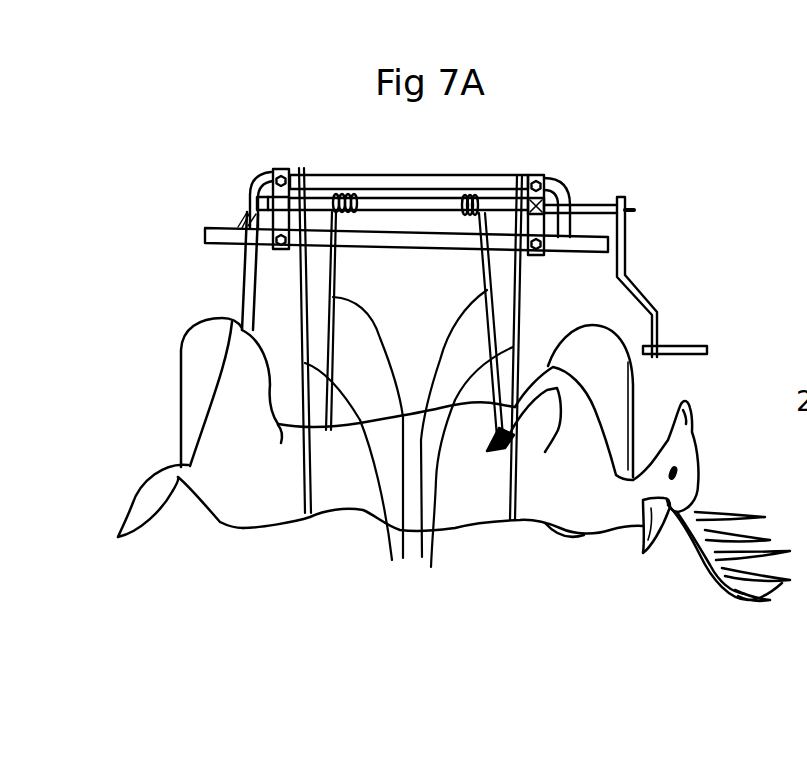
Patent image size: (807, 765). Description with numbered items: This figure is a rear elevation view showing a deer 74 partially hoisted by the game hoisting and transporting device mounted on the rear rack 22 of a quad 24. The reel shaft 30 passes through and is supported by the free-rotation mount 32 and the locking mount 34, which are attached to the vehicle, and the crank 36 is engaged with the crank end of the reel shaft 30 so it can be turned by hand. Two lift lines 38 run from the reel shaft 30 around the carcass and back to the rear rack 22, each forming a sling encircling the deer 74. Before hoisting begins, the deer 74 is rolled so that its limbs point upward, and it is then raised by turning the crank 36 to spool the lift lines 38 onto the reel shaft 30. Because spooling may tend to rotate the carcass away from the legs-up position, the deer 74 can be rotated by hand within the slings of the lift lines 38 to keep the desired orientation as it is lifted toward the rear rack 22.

The rear rack 22 is at (560, 222).
The quad 24 is at (170, 388).
The reel shaft 30 is at (423, 206).
The free-rotation mount 32 is at (272, 182).
The locking mount 34 is at (540, 196).
The crank 36 is at (625, 272).
The lift lines 38 is at (410, 389).
The deer 74 is at (267, 490).